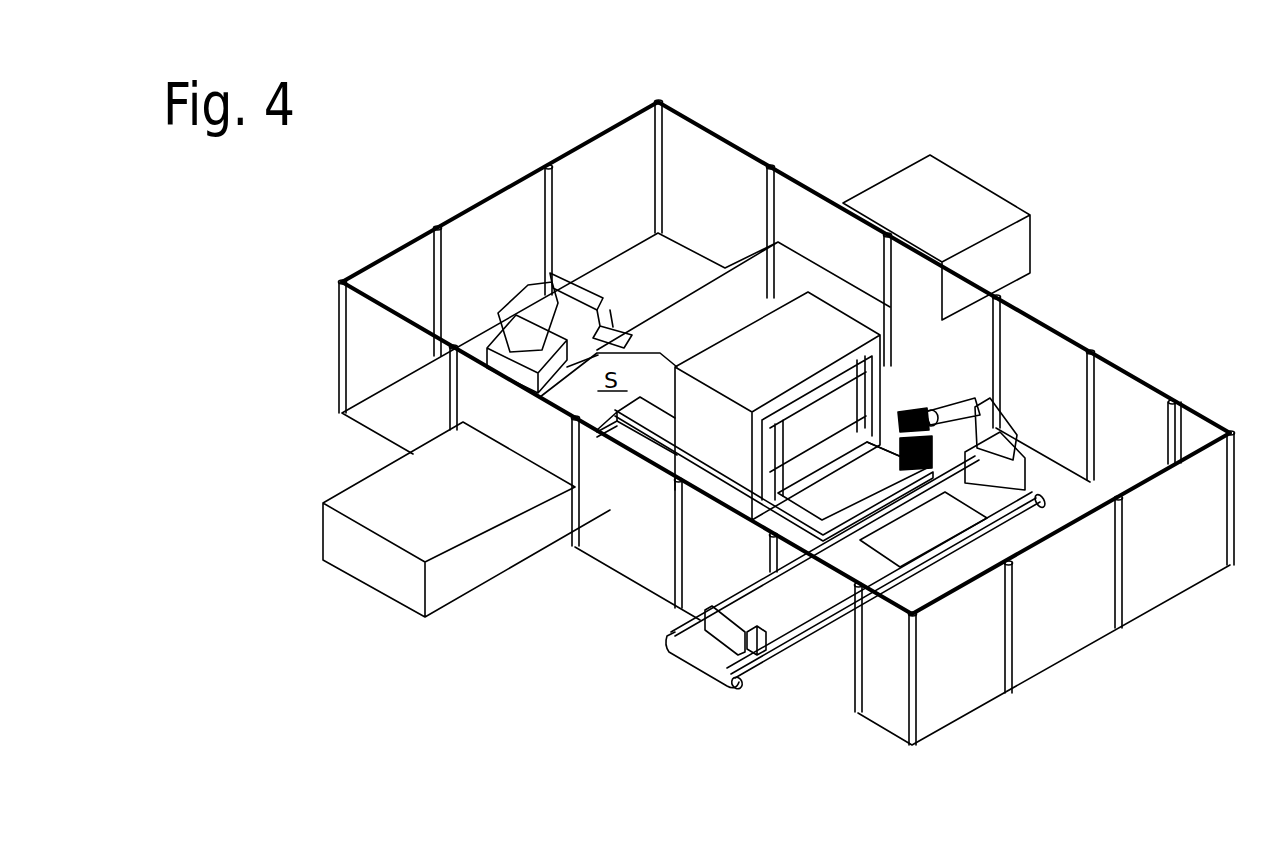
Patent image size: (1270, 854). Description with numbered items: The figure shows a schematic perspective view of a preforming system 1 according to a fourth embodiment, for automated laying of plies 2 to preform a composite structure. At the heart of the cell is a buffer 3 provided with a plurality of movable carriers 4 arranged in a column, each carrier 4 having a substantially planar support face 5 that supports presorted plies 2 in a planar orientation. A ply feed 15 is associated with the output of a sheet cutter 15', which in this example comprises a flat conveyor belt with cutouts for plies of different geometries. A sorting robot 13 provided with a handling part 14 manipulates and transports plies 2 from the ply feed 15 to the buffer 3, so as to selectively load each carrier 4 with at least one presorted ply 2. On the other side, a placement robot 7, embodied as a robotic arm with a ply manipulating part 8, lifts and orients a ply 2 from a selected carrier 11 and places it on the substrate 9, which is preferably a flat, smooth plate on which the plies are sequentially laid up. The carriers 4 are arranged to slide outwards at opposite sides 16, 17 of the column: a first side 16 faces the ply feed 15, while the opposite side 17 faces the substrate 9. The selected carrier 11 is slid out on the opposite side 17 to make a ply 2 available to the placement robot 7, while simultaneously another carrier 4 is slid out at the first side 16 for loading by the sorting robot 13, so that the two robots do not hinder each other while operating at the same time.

The preforming system 1 is at (1105, 200).
The ply 2 is at (837, 492).
The buffer 3 is at (785, 358).
The carrier 4 is at (880, 405).
The support face 5 is at (870, 440).
The placement robot 7 is at (530, 312).
The ply manipulating part 8 is at (612, 320).
The substrate 9 is at (567, 392).
The selected carrier 11 is at (622, 437).
The sorting robot 13 is at (1003, 427).
The handling part 14 is at (1003, 432).
The ply feed 15 is at (901, 574).
The sheet cutter 15' is at (768, 685).
The first side 16 is at (685, 348).
The opposite side 17 is at (847, 377).